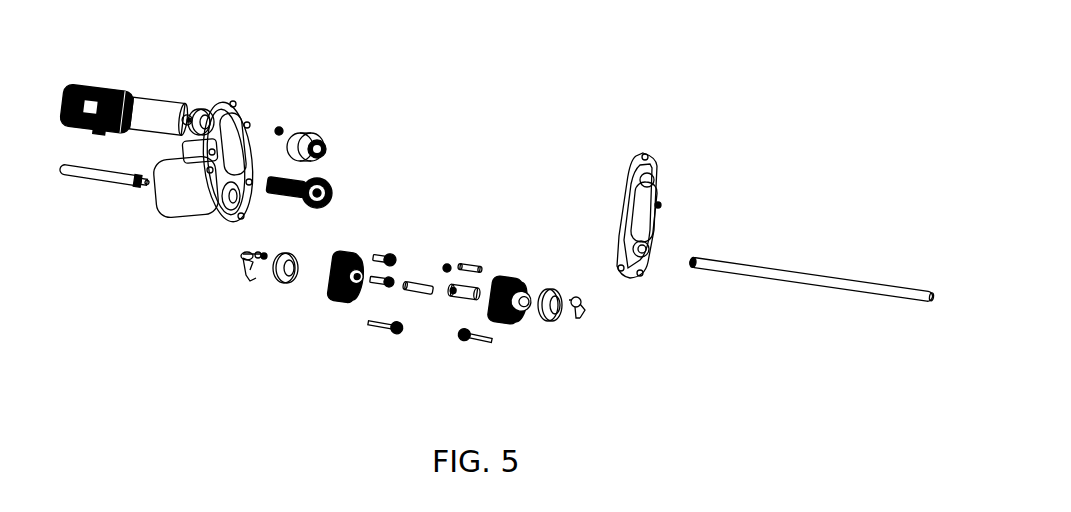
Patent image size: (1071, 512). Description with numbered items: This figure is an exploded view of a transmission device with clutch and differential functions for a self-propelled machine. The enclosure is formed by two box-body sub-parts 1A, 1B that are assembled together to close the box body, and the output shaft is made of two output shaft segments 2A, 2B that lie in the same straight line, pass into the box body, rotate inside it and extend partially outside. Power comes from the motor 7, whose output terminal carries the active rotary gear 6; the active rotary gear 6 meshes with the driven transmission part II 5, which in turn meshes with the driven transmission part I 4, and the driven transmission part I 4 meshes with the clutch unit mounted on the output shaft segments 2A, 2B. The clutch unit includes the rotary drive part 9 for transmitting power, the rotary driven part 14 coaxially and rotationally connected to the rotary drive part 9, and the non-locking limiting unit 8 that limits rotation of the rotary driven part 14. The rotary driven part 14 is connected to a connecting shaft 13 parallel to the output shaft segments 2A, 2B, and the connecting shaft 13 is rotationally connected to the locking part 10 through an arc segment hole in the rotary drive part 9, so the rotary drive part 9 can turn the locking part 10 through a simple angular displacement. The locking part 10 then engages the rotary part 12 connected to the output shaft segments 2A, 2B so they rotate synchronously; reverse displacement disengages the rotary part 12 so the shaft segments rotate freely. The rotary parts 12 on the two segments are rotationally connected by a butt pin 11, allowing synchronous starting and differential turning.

The box-body sub-part 1A is at (225, 100).
The box-body sub-part 1B is at (650, 176).
The output shaft segment 2A is at (92, 174).
The output shaft segment 2B is at (717, 266).
The driven transmission part I 4 is at (330, 186).
The driven transmission part II 5 is at (320, 136).
The active rotary gear 6 is at (287, 127).
The motor 7 is at (140, 110).
The limiting unit 8 is at (245, 285).
The rotary drive part 9 is at (340, 300).
The locking part 10 is at (390, 258).
The butt pin 11 is at (412, 283).
The rotary part 12 is at (460, 266).
The connecting shaft 13 is at (480, 268).
The rotary driven part 14 is at (548, 318).